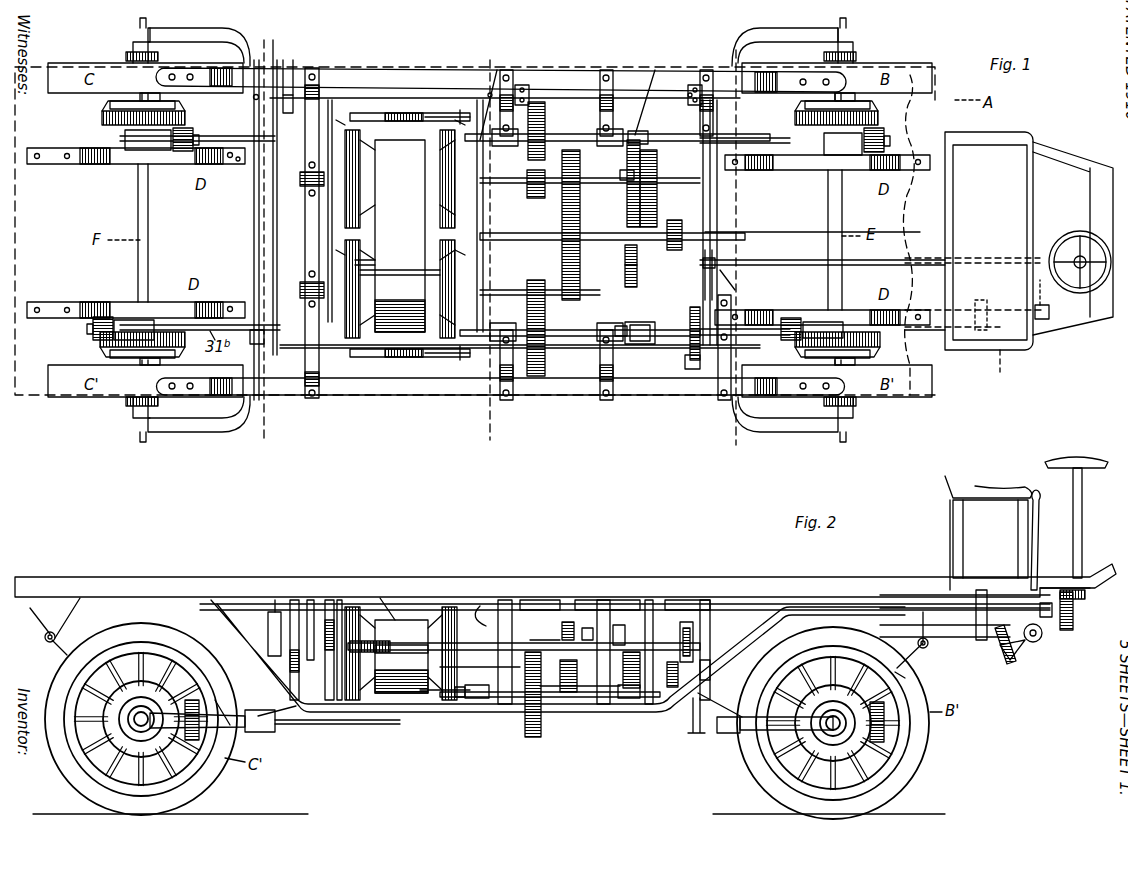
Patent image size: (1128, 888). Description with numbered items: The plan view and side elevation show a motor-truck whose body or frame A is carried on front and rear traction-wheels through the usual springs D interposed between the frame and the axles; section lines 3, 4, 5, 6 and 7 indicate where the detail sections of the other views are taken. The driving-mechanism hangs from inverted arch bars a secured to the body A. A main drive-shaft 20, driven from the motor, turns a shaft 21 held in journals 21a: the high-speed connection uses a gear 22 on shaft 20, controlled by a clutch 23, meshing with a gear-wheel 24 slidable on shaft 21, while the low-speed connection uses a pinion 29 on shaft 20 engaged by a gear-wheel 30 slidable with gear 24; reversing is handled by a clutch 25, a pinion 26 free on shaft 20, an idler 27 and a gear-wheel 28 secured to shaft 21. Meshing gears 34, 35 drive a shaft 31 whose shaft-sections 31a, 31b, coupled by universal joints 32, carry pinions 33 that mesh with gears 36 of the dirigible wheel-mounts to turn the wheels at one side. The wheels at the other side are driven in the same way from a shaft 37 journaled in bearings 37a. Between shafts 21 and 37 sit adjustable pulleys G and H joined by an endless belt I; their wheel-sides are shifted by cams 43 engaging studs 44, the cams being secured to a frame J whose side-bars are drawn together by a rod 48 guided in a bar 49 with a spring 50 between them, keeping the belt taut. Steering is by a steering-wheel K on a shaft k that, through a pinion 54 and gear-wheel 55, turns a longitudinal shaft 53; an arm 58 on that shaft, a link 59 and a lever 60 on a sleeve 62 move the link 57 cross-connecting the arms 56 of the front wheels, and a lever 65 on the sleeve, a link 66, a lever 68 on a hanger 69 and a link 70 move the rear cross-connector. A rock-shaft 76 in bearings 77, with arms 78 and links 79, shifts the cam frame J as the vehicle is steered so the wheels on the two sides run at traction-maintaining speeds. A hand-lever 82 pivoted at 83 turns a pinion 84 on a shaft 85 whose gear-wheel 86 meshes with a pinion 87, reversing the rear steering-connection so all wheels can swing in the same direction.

In FIG. 1, the section line 3— 3 is at (478, 50).
In FIG. 1, the section line 4— 4 is at (748, 38).
In FIG. 1, the section line 5— 5 is at (645, 468).
In FIG. 1, the section line 6— 6 is at (258, 45).
In FIG. 1, the section line 7— 7 is at (720, 70).
In FIG. 1, the main drive-shaft 20 is at (750, 236).
In FIG. 1, the shaft 21 is at (553, 135).
In FIG. 1, the journals 21a is at (330, 205).
In FIG. 1, the gear 22 is at (640, 260).
In FIG. 1, the clutch 23 is at (640, 280).
In FIG. 2, the clutch 23 is at (620, 625).
In FIG. 1, the gear-wheel 24 is at (630, 140).
In FIG. 1, the clutch 25 is at (620, 180).
In FIG. 2, the clutch 25 is at (568, 622).
In FIG. 1, the pinion 26 is at (535, 290).
In FIG. 1, the idler 27 is at (560, 200).
In FIG. 1, the gear-wheel 28 is at (600, 100).
In FIG. 1, the pinion 29 is at (675, 220).
In FIG. 1, the gear-wheel 30 is at (650, 150).
In FIG. 1, the shaft 31 is at (590, 70).
In FIG. 2, the shaft 31 is at (578, 700).
In FIG. 1, the shaft-section 31a is at (750, 138).
In FIG. 2, the shaft-section 31a is at (692, 712).
In FIG. 1, the shaft-section 31b is at (228, 136).
In FIG. 2, the shaft-section 31b is at (305, 726).
In FIG. 1, the universal joint 32 is at (488, 92).
In FIG. 2, the universal joint 32 is at (472, 700).
In FIG. 1, the pinion 33 is at (190, 135).
In FIG. 2, the pinion 33 is at (105, 740).
In FIG. 1, the gear 34 is at (527, 190).
In FIG. 1, the gear 35 is at (535, 102).
In FIG. 2, the gear 35 is at (530, 737).
In FIG. 1, the gear 36 is at (105, 118).
In FIG. 1, the shaft 37 is at (572, 290).
In FIG. 2, the shaft 37 is at (568, 700).
In FIG. 1, the bearings 37a is at (300, 290).
In FIG. 1, the cams 43 is at (343, 225).
In FIG. 1, the stud 44 is at (340, 290).
In FIG. 1, the rod 48 is at (385, 112).
In FIG. 1, the bar 49 is at (455, 112).
In FIG. 1, the spring 50 is at (415, 112).
In FIG. 1, the steering shaft 53 is at (812, 266).
In FIG. 2, the steering shaft 53 is at (890, 598).
In FIG. 2, the pinion 54 is at (1074, 612).
In FIG. 2, the gear-wheel 55 is at (1055, 618).
In FIG. 1, the arm 56 is at (197, 36).
In FIG. 2, the arm 56 is at (195, 745).
In FIG. 1, the link 57 is at (725, 228).
In FIG. 2, the link 57 is at (258, 710).
In FIG. 1, the arm 58 is at (716, 272).
In FIG. 1, the link 59 is at (716, 286).
In FIG. 1, the lever 60 is at (695, 362).
In FIG. 1, the sleeve 62 is at (648, 322).
In FIG. 2, the sleeve 62 is at (535, 645).
In FIG. 1, the lever or frame 65 is at (258, 400).
In FIG. 2, the lever or frame 65 is at (280, 612).
In FIG. 1, the link 66 is at (300, 286).
In FIG. 1, the lever 68 is at (276, 66).
In FIG. 1, the hanger 69 is at (288, 62).
In FIG. 1, the link 70 is at (328, 212).
In FIG. 1, the rock-shaft 76 is at (640, 100).
In FIG. 2, the rock-shaft 76 is at (385, 610).
In FIG. 1, the bearings 77 is at (705, 68).
In FIG. 1, the arm 78 is at (478, 140).
In FIG. 2, the arm 78 is at (478, 612).
In FIG. 1, the link 79 is at (305, 172).
In FIG. 1, the hand-lever 82 is at (1050, 318).
In FIG. 2, the hand-lever 82 is at (1030, 550).
In FIG. 2, the pivot 83 is at (1033, 642).
In FIG. 1, the pinion 84 is at (993, 346).
In FIG. 2, the pinion 84 is at (1012, 662).
In FIG. 1, the shaft 85 is at (918, 330).
In FIG. 2, the shaft 85 is at (970, 640).
In FIG. 1, the gear-wheel 86 is at (693, 307).
In FIG. 2, the gear-wheel 86 is at (685, 622).
In FIG. 2, the pinion 87 is at (710, 672).
In FIG. 2, the body or frame A is at (270, 577).
In FIG. 2, the springs D is at (70, 620).
In FIG. 1, the adjustable pulley G is at (375, 44).
In FIG. 2, the adjustable pulley G is at (401, 653).
In FIG. 1, the adjustable pulley H is at (400, 273).
In FIG. 2, the adjustable pulley H is at (350, 700).
In FIG. 1, the endless belt I is at (400, 236).
In FIG. 2, the endless belt I is at (405, 620).
In FIG. 1, the frame J is at (305, 118).
In FIG. 2, the frame J is at (418, 645).
In FIG. 1, the steering-wheel or lever K is at (1078, 232).
In FIG. 2, the shaft k is at (1082, 524).
In FIG. 1, the inverted arch bar a is at (360, 70).
In FIG. 2, the inverted arch bar a is at (325, 602).